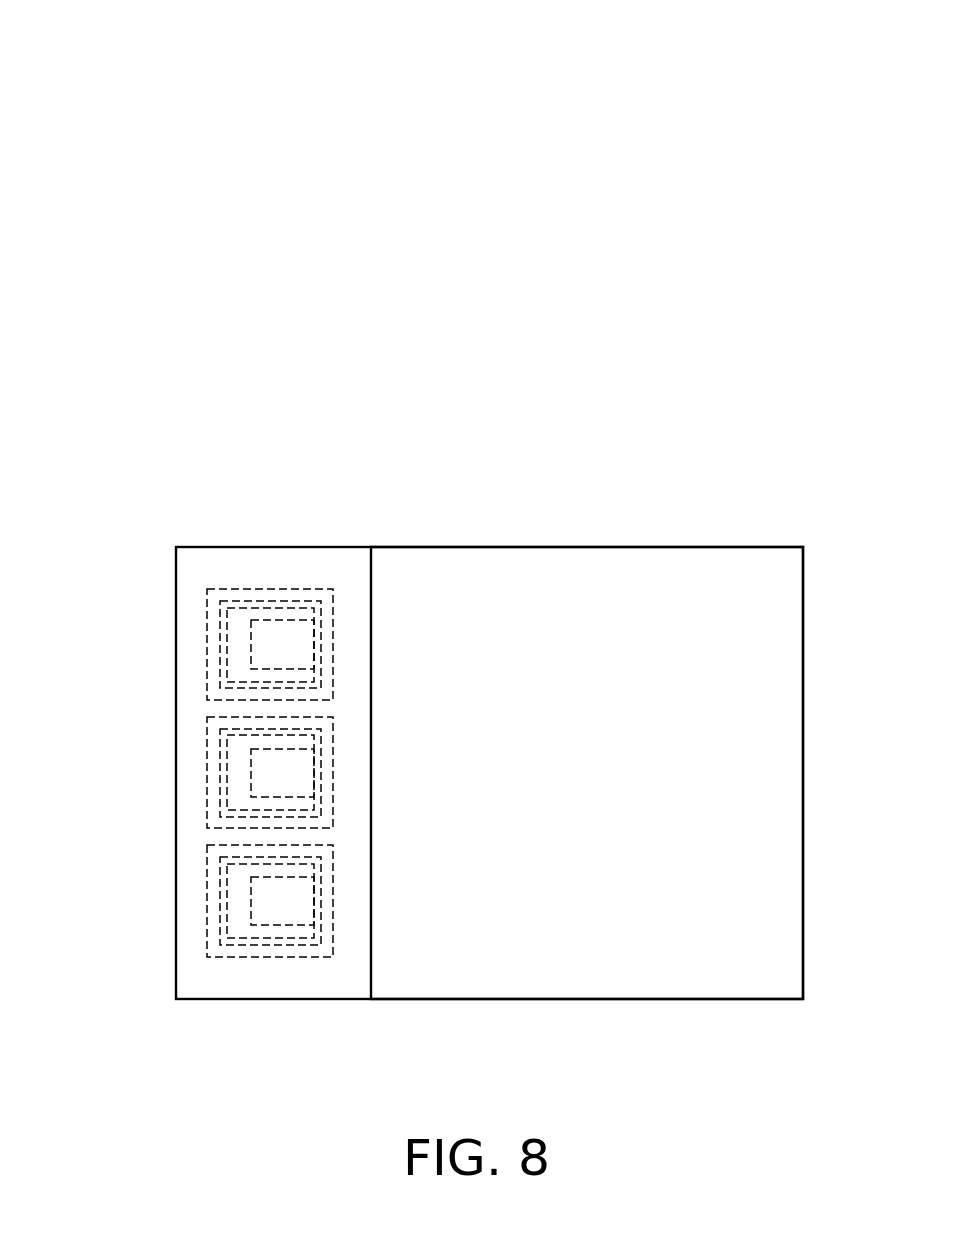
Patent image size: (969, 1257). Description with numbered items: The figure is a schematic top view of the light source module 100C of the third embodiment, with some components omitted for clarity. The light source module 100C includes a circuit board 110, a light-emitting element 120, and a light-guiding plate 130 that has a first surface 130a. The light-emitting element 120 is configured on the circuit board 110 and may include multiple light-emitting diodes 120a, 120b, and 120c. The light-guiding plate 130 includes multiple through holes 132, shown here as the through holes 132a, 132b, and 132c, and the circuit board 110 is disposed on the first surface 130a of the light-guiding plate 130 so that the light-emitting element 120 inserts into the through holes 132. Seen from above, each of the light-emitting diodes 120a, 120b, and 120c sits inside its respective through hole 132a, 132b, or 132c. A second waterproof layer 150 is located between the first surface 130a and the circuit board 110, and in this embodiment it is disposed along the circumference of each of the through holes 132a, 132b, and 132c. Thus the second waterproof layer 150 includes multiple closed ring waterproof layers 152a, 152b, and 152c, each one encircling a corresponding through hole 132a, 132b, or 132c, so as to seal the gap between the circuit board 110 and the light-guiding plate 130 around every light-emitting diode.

The light source module 100C is at (862, 1101).
The circuit board 110 is at (261, 983).
The light-emitting element 120 is at (534, 463).
The light-emitting diode 120a is at (277, 637).
The light-emitting diode 120b is at (292, 774).
The light-emitting diode 120c is at (292, 900).
The light-guiding plate 130 is at (587, 722).
The first surface 130a is at (538, 560).
The through holes 132 is at (447, 564).
The through hole 132a is at (227, 666).
The through hole 132b is at (227, 773).
The through hole 132c is at (227, 921).
The second waterproof layer 150 is at (447, 661).
The closed ring waterproof layer 152a is at (217, 613).
The closed ring waterproof layer 152b is at (217, 741).
The closed ring waterproof layer 152c is at (217, 870).